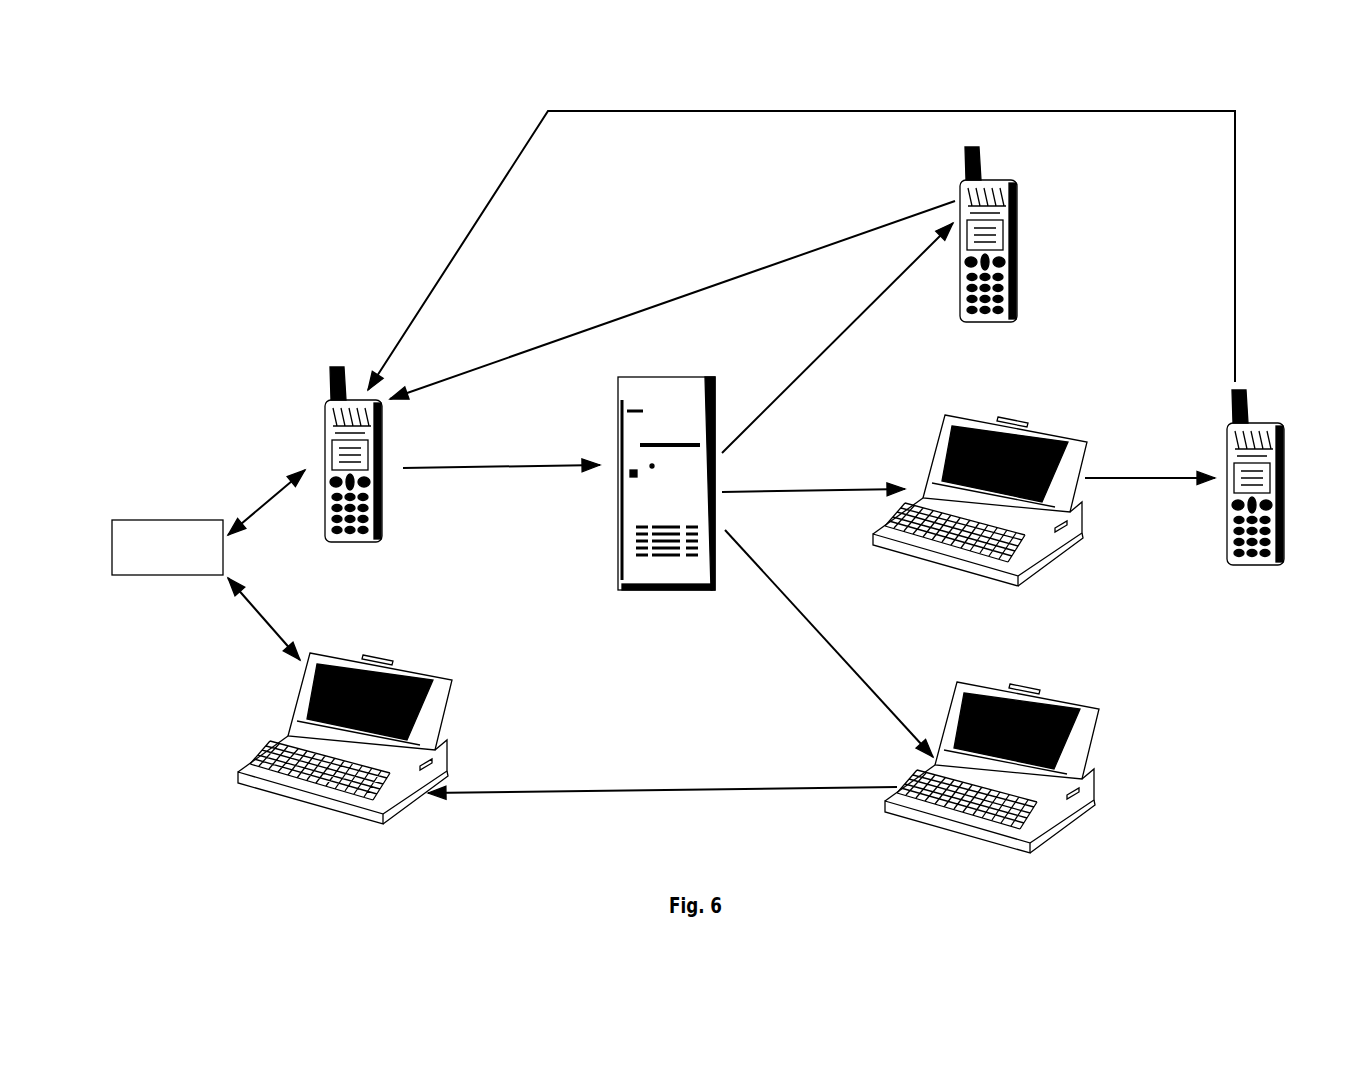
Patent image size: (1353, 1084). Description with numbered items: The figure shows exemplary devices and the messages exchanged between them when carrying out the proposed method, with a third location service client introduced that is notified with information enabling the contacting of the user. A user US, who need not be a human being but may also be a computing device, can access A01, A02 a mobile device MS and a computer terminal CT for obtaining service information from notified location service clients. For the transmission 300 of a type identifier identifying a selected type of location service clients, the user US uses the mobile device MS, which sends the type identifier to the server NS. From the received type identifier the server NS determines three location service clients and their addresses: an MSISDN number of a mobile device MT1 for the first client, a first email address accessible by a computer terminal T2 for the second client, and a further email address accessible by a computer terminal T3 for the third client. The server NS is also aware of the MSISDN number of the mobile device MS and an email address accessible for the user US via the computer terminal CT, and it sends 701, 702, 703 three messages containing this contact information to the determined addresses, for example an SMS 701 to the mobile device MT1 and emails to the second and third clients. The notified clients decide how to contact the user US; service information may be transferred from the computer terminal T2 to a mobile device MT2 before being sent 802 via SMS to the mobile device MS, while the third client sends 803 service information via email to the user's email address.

The user US is at (140, 547).
The mobile device MS is at (325, 454).
The server NS is at (640, 483).
The computer terminal CT is at (345, 738).
The mobile device MT1 is at (1024, 234).
The mobile device MT2 is at (1284, 477).
The computer terminal T2 is at (996, 500).
The computer terminal T3 is at (1013, 767).
The transmission of the type identifier 300 is at (508, 464).
The message to the first location service client 701 is at (683, 295).
The message to the second location service client 702 is at (807, 488).
The message to the third location service client 703 is at (844, 654).
The sending of service information 802 is at (796, 104).
The sending of service information via email 803 is at (699, 785).
The access A01 is at (282, 503).
The access A02 is at (272, 641).